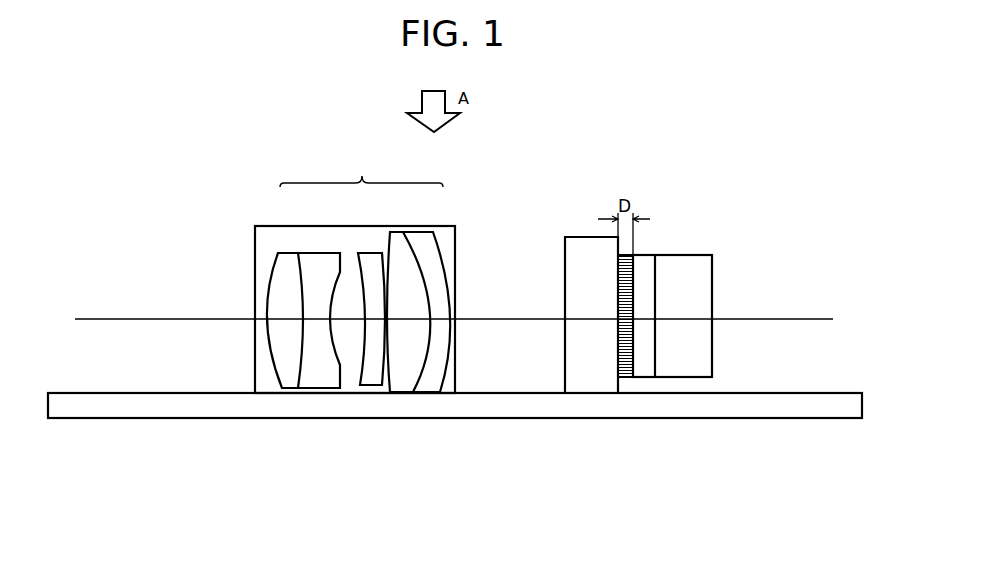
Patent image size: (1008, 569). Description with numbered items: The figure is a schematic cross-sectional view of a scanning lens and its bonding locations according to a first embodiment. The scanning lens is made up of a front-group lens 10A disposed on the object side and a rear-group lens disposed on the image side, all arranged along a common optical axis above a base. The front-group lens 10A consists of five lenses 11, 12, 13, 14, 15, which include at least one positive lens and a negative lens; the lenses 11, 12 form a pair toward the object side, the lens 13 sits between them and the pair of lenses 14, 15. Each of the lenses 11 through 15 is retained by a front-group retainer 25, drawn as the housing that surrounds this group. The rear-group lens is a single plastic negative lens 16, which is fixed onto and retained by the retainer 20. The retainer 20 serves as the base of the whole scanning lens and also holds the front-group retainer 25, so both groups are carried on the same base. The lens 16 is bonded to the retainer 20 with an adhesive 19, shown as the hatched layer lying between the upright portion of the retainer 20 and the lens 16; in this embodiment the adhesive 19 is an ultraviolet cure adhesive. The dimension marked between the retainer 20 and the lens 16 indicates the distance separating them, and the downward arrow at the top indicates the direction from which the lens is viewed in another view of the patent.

The front-group lens 10A is at (361, 171).
The lens 11 is at (288, 257).
The lens 12 is at (320, 257).
The lens 13 is at (372, 258).
The lens 14 is at (400, 247).
The lens 15 is at (422, 247).
The plastic negative lens 16 is at (732, 222).
The adhesive 19 is at (628, 268).
The retainer 20 is at (590, 242).
The front-group retainer 25 is at (253, 265).